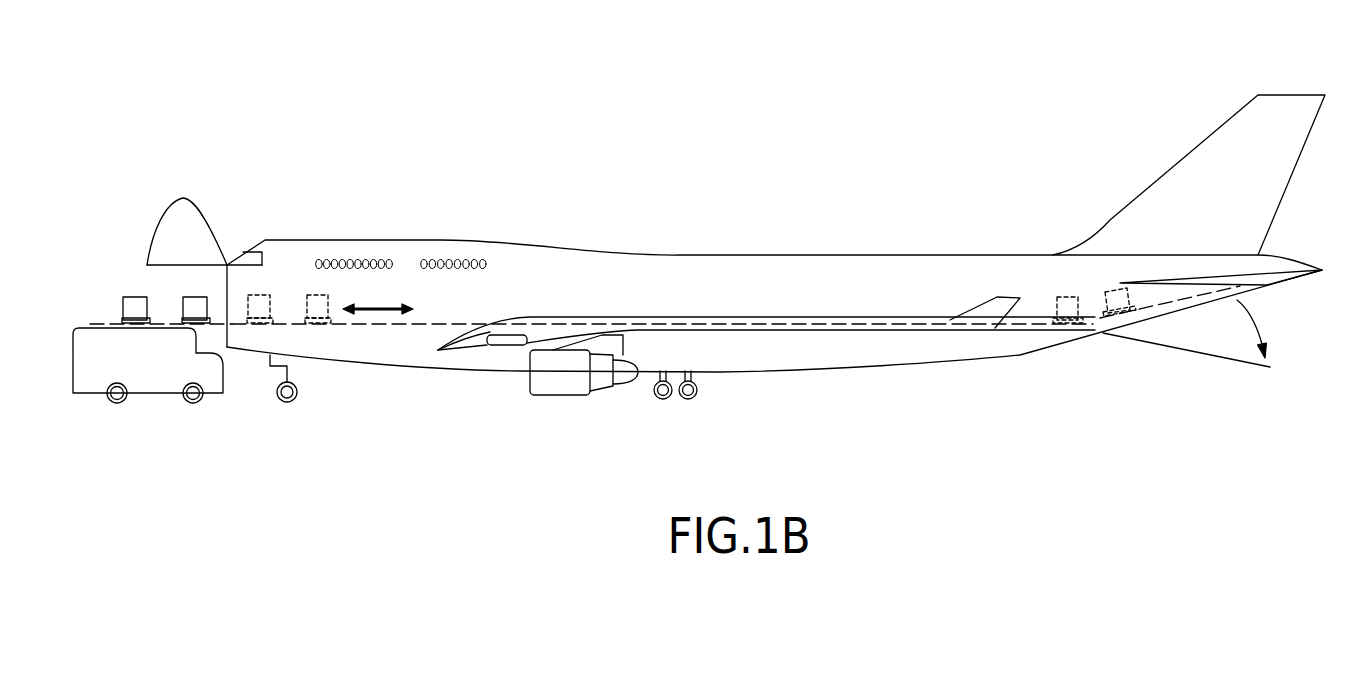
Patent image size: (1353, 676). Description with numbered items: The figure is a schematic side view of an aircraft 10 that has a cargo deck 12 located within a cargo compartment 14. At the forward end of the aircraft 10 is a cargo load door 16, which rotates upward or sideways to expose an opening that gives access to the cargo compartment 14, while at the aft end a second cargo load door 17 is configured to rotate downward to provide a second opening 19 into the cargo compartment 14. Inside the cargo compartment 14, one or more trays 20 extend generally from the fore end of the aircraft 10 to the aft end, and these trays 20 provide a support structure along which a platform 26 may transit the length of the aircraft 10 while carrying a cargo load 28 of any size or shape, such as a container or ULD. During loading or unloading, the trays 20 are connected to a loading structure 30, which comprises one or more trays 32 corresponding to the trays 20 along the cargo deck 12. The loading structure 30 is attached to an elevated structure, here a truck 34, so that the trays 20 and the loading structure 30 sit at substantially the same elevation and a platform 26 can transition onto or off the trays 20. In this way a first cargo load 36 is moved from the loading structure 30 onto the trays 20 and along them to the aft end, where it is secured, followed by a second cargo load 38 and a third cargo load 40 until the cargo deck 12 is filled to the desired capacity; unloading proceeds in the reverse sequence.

The aircraft 10 is at (281, 118).
The cargo deck 12 is at (312, 324).
The cargo compartment 14 is at (593, 262).
The cargo load door 16 is at (178, 213).
The second cargo load door 17 is at (1193, 352).
The second opening 19 is at (1276, 316).
The trays 20 is at (372, 350).
The platform 26 is at (122, 321).
The cargo load 28 is at (135, 297).
The loading structure 30 is at (93, 323).
The trays 32 is at (112, 323).
The truck 34 is at (143, 387).
The first cargo load 36 is at (1067, 297).
The second cargo load 38 is at (321, 299).
The third cargo load 40 is at (266, 310).